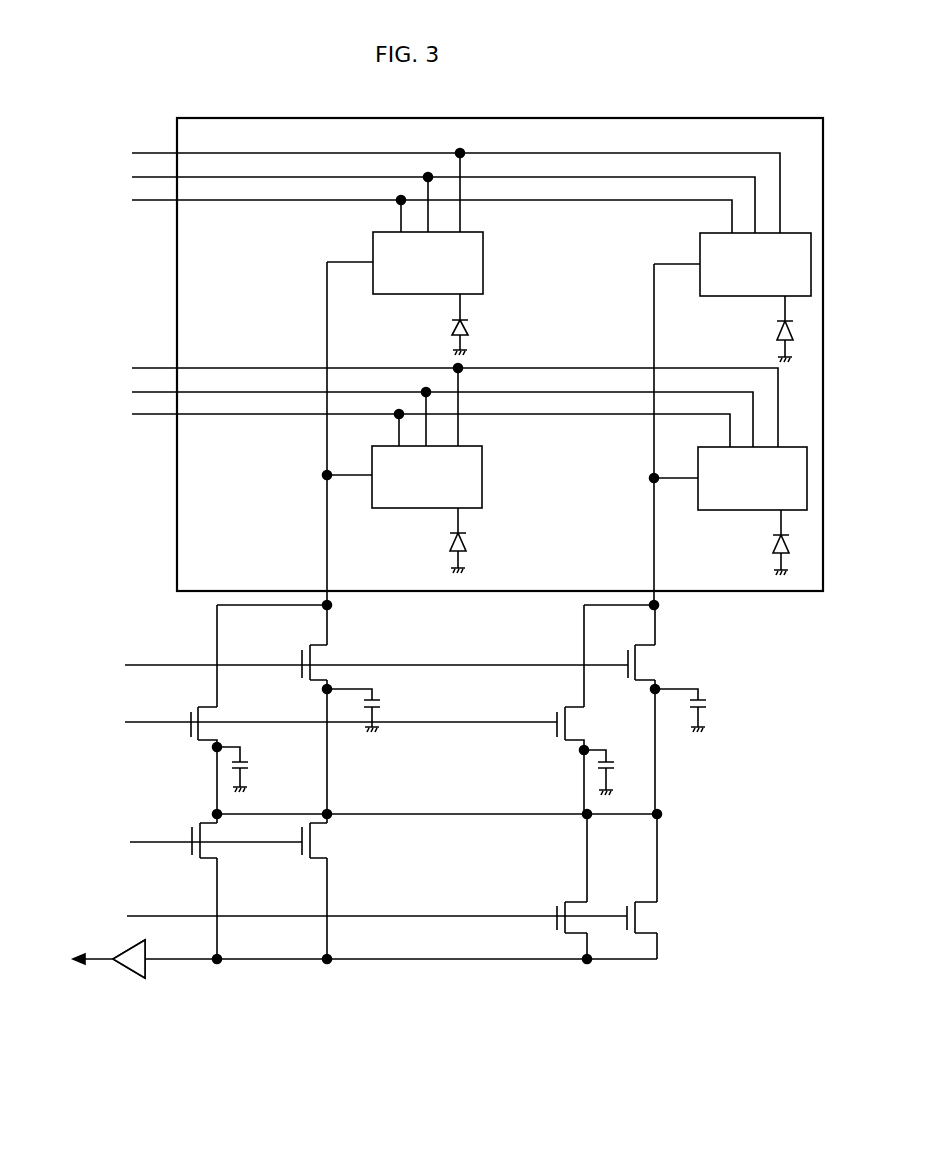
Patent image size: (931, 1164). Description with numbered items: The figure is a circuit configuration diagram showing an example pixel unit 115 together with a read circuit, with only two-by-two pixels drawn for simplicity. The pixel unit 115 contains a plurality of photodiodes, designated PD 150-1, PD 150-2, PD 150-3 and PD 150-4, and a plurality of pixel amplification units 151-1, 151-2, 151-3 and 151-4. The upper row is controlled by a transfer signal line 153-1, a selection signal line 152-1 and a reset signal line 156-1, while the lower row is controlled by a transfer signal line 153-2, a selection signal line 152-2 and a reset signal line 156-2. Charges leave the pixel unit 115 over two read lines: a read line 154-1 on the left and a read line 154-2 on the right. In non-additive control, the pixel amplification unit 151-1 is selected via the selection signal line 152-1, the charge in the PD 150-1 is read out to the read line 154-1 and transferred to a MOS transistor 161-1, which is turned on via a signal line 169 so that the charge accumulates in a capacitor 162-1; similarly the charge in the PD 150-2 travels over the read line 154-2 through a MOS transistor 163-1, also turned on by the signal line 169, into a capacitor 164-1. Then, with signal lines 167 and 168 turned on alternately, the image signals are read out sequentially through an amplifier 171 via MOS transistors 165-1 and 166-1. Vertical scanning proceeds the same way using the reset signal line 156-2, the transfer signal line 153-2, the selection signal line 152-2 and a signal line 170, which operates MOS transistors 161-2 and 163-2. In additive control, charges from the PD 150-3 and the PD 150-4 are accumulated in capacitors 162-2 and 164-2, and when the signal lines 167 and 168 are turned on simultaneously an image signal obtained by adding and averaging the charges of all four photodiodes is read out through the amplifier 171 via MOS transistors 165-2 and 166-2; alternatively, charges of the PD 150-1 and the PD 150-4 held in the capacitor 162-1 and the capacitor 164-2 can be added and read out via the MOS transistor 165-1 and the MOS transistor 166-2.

The pixel unit 115 is at (585, 118).
The PD 150-1 is at (447, 331).
The PD 150-2 is at (776, 334).
The PD 150-3 is at (445, 544).
The PD 150-4 is at (770, 560).
The pixel amplification unit 151-1 is at (371, 248).
The pixel amplification unit 151-2 is at (698, 249).
The pixel amplification unit 151-3 is at (483, 478).
The pixel amplification unit 151-4 is at (698, 510).
The selection signal line 152-1 is at (132, 177).
The selection signal line 152-2 is at (132, 392).
The transfer signal line 153-1 is at (132, 153).
The transfer signal line 153-2 is at (132, 368).
The read line 154-1 is at (326, 532).
The read line 154-2 is at (652, 538).
The reset signal line 156-1 is at (132, 200).
The reset signal line 156-2 is at (132, 414).
The MOS transistor 161-1 is at (330, 652).
The MOS transistor 161-2 is at (220, 718).
The capacitor 162-1 is at (381, 698).
The capacitor 162-2 is at (249, 768).
The MOS transistor 163-1 is at (656, 656).
The MOS transistor 163-2 is at (571, 742).
The capacitor 164-1 is at (706, 704).
The capacitor 164-2 is at (625, 736).
The MOS transistor 165-1 is at (330, 844).
The MOS transistor 165-2 is at (220, 858).
The MOS transistor 166-1 is at (656, 913).
The MOS transistor 166-2 is at (567, 900).
The signal line 167 is at (132, 842).
The signal line 168 is at (132, 916).
The signal line 169 is at (125, 665).
The signal line 170 is at (125, 722).
The amplifier 171 is at (136, 974).